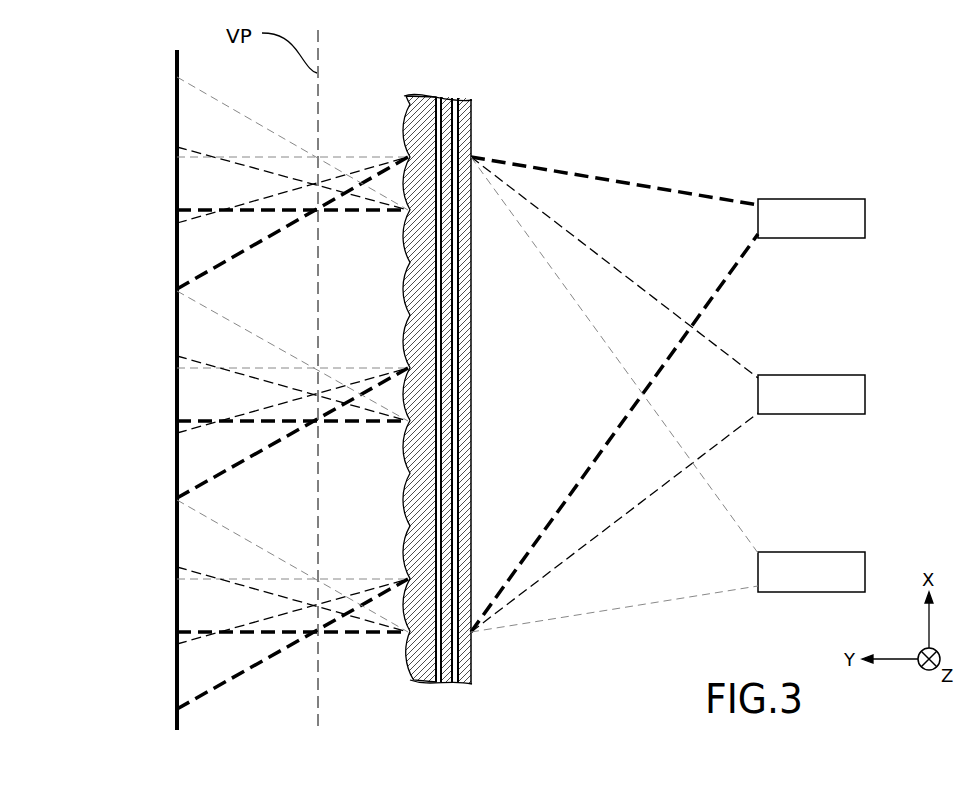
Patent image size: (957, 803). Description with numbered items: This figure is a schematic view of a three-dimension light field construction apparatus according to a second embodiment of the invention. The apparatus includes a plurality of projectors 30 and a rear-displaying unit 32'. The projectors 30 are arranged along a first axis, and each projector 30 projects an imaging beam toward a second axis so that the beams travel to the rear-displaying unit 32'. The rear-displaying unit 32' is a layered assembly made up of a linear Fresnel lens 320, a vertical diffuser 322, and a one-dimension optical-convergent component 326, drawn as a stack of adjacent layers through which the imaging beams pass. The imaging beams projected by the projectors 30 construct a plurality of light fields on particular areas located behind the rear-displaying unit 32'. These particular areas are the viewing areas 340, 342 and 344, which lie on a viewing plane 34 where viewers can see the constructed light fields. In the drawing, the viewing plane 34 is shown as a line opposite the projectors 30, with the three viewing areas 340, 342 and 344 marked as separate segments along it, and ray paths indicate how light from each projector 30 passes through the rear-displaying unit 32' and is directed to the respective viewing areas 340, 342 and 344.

The viewing plane 34 is at (179, 69).
The rear-displaying unit 32' is at (436, 346).
The one-dimension optical-convergent component 326 is at (423, 130).
The vertical diffuser 322 is at (447, 112).
The linear Fresnel lens 320 is at (496, 368).
The viewing area 340 is at (164, 74).
The viewing area 342 is at (164, 292).
The viewing area 344 is at (164, 710).
The projector 30 is at (817, 385).